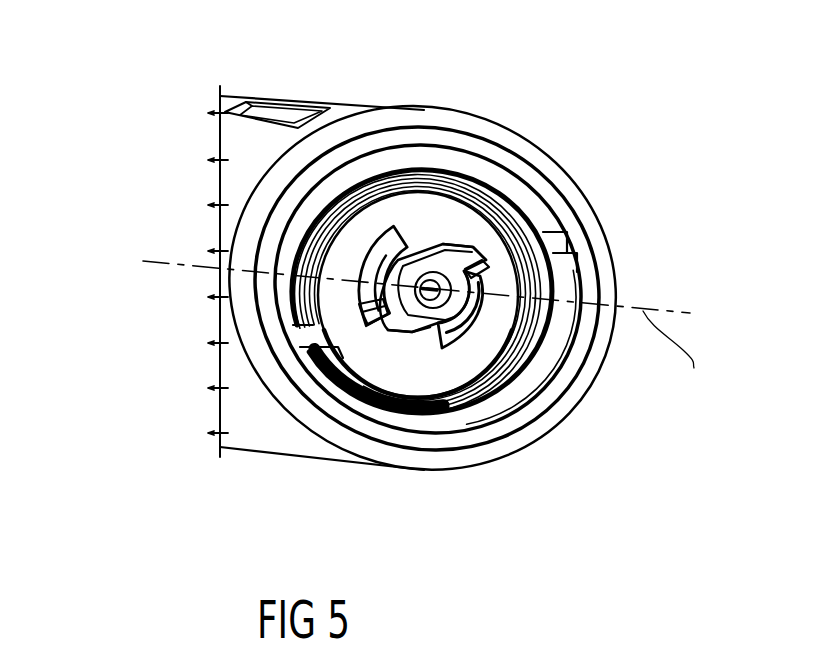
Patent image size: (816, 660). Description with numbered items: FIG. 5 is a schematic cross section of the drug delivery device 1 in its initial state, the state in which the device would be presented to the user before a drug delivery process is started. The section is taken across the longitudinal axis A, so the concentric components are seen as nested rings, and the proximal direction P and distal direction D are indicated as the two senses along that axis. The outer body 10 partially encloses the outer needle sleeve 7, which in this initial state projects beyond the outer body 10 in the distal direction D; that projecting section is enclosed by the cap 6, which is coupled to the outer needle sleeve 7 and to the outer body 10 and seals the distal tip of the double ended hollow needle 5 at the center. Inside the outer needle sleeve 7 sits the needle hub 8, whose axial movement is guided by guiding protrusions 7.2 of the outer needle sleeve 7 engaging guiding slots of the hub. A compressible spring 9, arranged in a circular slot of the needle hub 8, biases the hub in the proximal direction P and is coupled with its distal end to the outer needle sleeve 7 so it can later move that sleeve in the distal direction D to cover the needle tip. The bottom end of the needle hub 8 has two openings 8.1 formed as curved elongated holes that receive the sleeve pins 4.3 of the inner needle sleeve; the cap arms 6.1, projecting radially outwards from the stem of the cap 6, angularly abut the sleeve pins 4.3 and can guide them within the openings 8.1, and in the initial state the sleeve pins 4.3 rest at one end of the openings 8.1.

The drug delivery device 1 is at (424, 274).
The double ended hollow needle 5 is at (433, 292).
The cap 6 is at (532, 433).
The cap arms 6.1 is at (470, 253).
The outer needle sleeve 7 is at (553, 188).
The guiding protrusions 7.2 is at (563, 243).
The needle hub 8 is at (418, 210).
The openings 8.1 is at (357, 298).
The compressible spring 9 is at (313, 215).
The outer body 10 is at (340, 108).
The sleeve pins 4.3 is at (362, 322).
The proximal direction P is at (278, 265).
The distal direction D is at (576, 312).
The longitudinal axis A is at (680, 354).